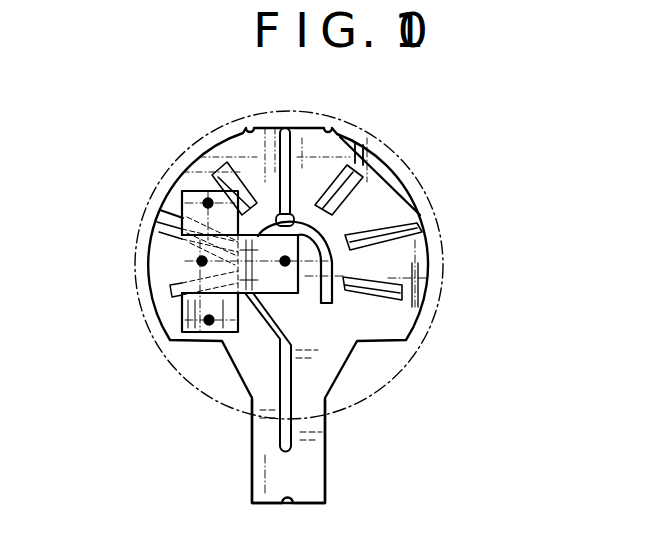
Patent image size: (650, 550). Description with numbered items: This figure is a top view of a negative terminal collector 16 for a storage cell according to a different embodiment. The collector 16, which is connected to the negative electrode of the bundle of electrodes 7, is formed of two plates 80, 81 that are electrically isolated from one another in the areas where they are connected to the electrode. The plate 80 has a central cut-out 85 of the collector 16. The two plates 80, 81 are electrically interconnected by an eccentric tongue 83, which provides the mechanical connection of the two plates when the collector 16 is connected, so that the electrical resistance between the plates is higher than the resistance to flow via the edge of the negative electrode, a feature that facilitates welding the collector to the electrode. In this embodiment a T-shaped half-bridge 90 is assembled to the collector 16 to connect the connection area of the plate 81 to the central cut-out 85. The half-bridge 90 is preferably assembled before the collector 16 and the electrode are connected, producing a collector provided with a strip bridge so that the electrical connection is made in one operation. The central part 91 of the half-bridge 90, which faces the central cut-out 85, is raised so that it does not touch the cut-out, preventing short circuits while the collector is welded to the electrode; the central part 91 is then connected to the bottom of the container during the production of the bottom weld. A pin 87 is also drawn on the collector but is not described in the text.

The bundle of electrodes 7 is at (141, 302).
The collector 16 is at (422, 316).
The plate 80 is at (380, 195).
The plate 81 is at (168, 245).
The eccentric tongue 83 is at (303, 472).
The central cut-out 85 is at (312, 290).
The pin 87 is at (205, 198).
The T-shaped half-bridge 90 is at (195, 345).
The central part 91 is at (270, 255).